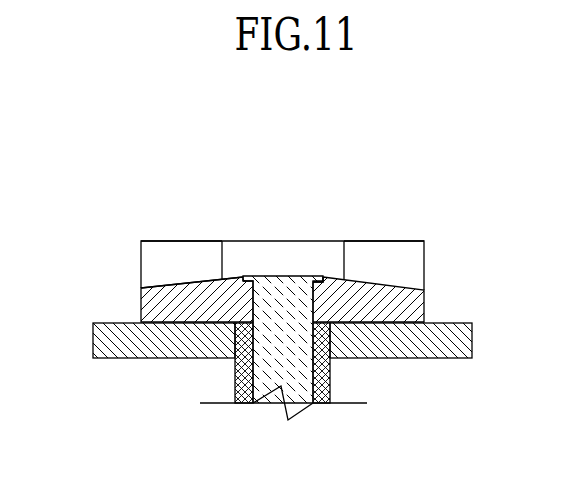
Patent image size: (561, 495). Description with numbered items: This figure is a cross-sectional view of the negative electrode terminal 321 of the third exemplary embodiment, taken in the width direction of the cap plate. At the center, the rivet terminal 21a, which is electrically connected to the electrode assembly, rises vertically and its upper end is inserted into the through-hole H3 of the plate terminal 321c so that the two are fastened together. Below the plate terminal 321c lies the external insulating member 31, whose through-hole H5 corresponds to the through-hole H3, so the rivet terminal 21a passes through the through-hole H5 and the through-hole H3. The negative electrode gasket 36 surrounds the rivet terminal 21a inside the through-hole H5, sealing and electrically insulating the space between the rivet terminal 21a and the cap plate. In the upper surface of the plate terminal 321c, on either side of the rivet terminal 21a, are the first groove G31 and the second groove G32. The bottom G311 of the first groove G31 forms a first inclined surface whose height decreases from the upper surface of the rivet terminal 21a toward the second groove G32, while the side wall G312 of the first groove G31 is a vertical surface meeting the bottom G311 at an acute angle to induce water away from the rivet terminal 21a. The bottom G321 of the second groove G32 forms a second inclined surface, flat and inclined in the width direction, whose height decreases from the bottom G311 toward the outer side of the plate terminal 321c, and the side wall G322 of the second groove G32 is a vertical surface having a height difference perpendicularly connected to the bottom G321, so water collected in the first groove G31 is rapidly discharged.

The negative electrode terminal 321 is at (240, 198).
The second groove G32 is at (182, 176).
The bottom of second groove G321 is at (165, 286).
The side wall of second groove G322 is at (175, 253).
The first groove G31 is at (392, 169).
The bottom of first groove G311 is at (320, 277).
The side wall of first groove G312 is at (335, 253).
The plate terminal 321c is at (160, 298).
The through-hole H3 is at (313, 308).
The external insulating member 31 is at (112, 338).
The negative electrode gasket 36 is at (237, 373).
The through-hole H5 is at (322, 365).
The rivet terminal 21a is at (271, 378).